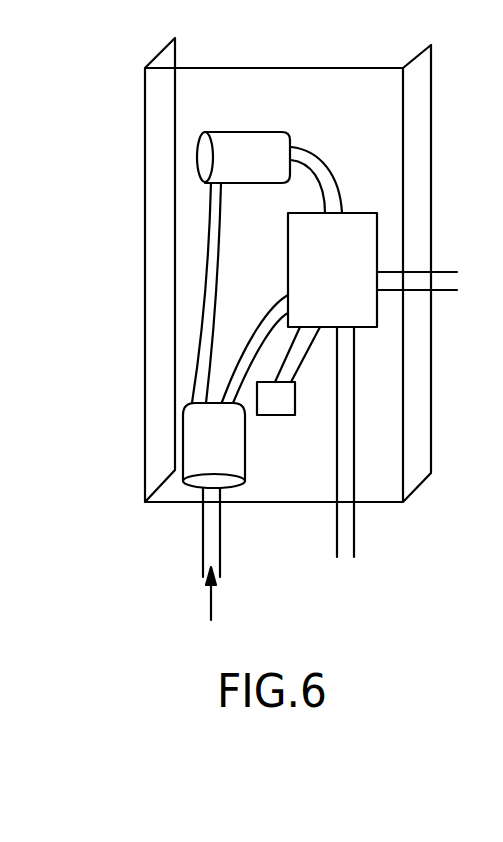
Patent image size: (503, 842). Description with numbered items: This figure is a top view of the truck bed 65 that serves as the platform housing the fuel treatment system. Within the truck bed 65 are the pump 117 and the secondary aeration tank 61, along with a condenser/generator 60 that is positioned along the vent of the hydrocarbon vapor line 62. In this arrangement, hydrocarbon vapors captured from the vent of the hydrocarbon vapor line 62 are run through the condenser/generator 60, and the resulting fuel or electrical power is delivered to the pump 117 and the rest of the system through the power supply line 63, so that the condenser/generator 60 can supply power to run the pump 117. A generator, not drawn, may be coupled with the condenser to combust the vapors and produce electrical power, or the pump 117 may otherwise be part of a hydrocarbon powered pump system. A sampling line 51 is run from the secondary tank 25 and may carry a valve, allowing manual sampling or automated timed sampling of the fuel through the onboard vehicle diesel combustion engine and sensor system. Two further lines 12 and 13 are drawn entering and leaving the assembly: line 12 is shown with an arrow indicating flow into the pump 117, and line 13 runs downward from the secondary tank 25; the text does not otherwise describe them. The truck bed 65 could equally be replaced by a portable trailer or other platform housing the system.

The truck bed 65 is at (136, 163).
The condenser/generator 60 is at (250, 138).
The hydrocarbon vapor line 62 is at (318, 168).
The power supply line 63 is at (215, 263).
The secondary tank 25 is at (312, 283).
The sampling line 51 is at (443, 270).
The outlet pipe 13 is at (357, 541).
The secondary aeration tank 61 is at (273, 415).
The pump 117 is at (188, 460).
The inlet pipe 12 is at (203, 566).